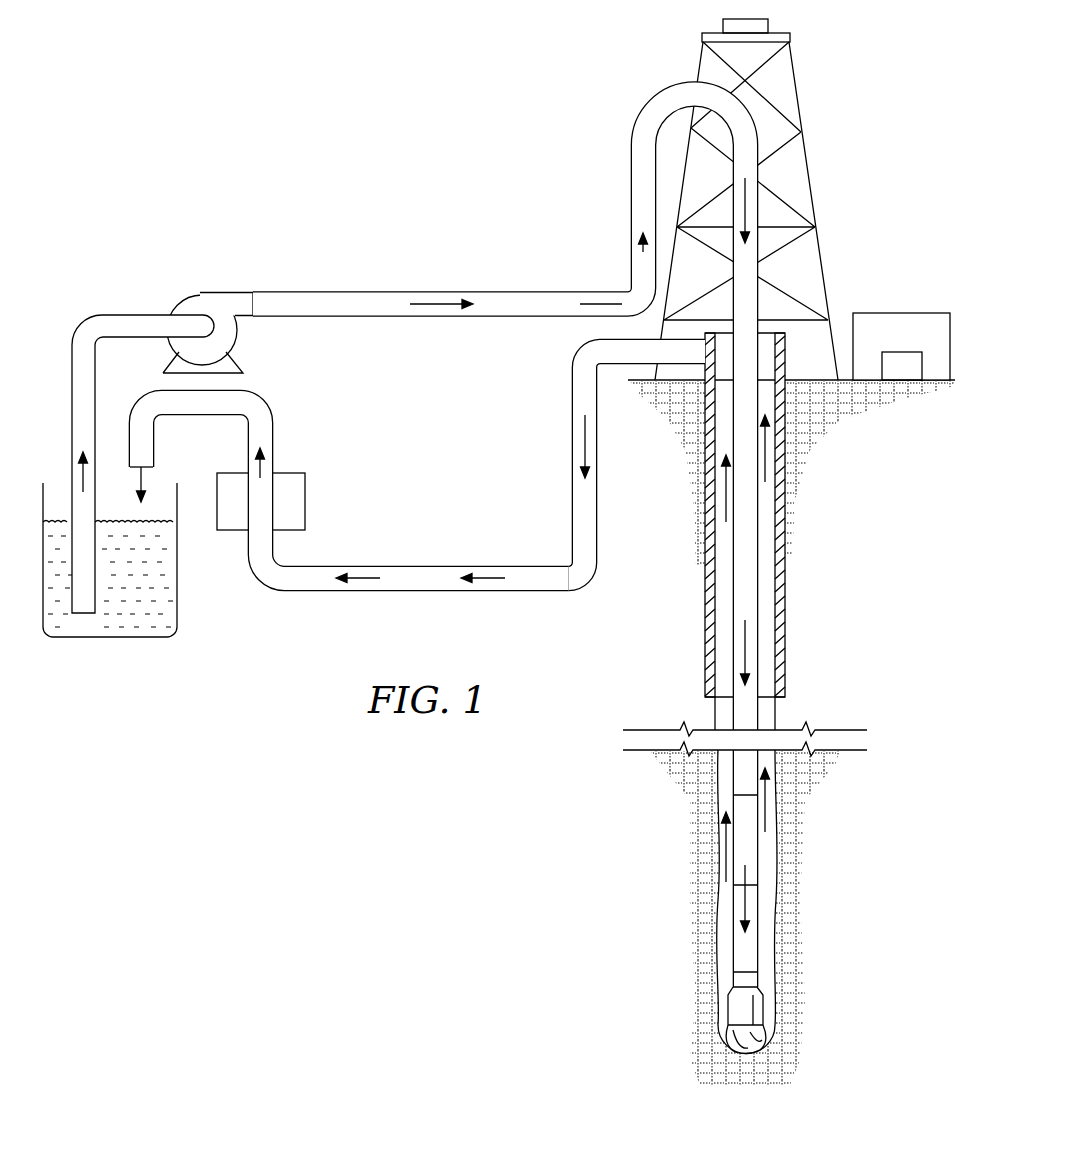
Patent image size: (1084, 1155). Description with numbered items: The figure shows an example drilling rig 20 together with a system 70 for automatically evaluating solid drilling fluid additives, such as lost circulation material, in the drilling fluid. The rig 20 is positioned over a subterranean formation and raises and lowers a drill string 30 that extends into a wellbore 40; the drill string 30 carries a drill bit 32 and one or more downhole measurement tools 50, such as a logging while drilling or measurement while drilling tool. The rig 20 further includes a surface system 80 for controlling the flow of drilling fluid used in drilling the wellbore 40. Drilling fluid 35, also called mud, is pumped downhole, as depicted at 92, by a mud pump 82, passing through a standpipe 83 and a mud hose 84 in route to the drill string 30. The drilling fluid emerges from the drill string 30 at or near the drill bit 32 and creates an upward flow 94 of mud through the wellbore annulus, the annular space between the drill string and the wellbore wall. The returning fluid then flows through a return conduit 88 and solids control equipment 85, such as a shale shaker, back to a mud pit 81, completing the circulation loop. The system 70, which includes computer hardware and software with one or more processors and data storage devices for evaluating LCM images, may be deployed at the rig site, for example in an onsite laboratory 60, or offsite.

The drilling rig 20 is at (865, 134).
The drill string 30 is at (760, 570).
The drill bit 32 is at (728, 1002).
The drilling fluid 35 is at (123, 592).
The wellbore 40 is at (718, 885).
The downhole measurement tools 50 is at (760, 847).
The onsite laboratory 60 is at (887, 313).
The system 70 is at (903, 351).
The surface system 80 is at (375, 97).
The mud pit 81 is at (112, 637).
The mud pump 82 is at (200, 290).
The standpipe 83 is at (357, 317).
The mud hose 84 is at (672, 93).
The solids control equipment 85 is at (305, 495).
The return conduit 88 is at (327, 591).
The downhole flow of drilling fluid 92 is at (440, 301).
The upward flow 94 is at (725, 490).